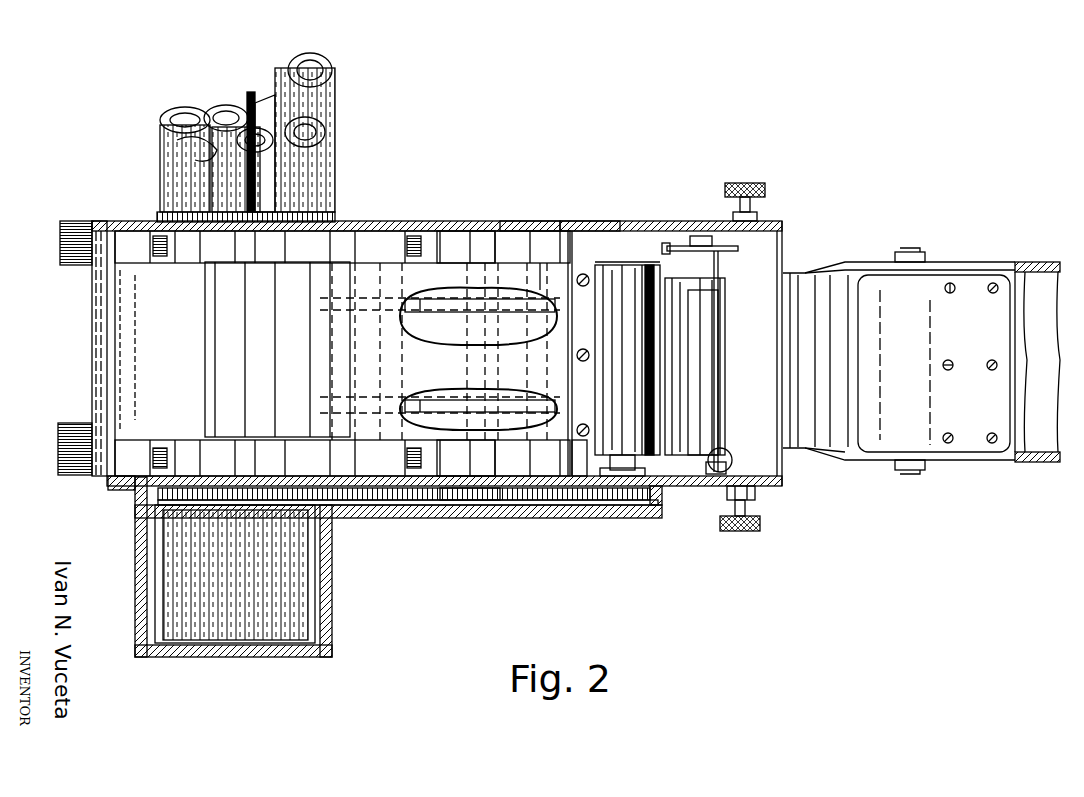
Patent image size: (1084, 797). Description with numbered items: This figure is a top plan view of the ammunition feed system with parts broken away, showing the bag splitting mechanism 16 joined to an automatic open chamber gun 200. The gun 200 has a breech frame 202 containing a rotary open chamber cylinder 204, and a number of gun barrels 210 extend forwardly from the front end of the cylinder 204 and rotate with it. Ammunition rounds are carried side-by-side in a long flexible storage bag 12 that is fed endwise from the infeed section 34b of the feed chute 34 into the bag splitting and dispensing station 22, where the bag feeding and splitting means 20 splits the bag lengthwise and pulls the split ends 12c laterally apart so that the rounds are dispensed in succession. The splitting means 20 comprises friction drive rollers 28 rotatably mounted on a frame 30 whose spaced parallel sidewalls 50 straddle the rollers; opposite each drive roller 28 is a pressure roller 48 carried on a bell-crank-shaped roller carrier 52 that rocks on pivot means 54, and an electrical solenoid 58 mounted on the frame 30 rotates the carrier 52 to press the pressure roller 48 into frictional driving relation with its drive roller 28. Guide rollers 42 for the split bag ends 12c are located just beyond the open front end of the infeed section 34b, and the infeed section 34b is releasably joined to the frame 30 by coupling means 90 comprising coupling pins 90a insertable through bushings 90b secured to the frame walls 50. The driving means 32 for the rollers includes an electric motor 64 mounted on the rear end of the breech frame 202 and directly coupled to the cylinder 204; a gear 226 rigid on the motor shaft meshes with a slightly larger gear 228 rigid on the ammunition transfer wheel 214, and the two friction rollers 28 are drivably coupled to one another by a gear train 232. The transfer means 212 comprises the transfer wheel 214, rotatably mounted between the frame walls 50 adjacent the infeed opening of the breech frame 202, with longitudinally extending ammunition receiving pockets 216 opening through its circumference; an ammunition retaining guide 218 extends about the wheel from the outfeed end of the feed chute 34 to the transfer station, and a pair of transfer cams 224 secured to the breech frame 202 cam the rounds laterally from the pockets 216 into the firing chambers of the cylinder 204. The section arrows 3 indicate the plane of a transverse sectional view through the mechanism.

The automatic gun 200 is at (82, 362).
The breech frame 202 is at (105, 303).
The breech cylinder 204 is at (222, 337).
The gun barrels 210 is at (336, 158).
The ammunition infeed transfer means 212 is at (450, 417).
The ammunition transfer wheel 214 is at (428, 332).
The ammunition receiving pockets 216 is at (507, 335).
The ammunition retaining guide 218 is at (541, 275).
The transfer cams 224 is at (420, 305).
The cylinder gear 226 is at (160, 492).
The transfer wheel gear 228 is at (487, 494).
The gear train 232 is at (611, 512).
The frame 30 is at (527, 219).
The driving means 32 is at (455, 508).
The frame sidewalls 50 is at (573, 228).
The bag feeding and splitting means 20 is at (589, 270).
The bag splitting mechanism 16 is at (580, 445).
The ammunition storage bag 12 is at (648, 290).
The split bag ends 12c is at (640, 472).
The friction drive rollers 28 is at (646, 318).
The pressure roller 48 is at (680, 365).
The guide rollers 42 is at (697, 425).
The bag splitting and ammunition dispensing station 22 is at (702, 215).
The roller carrier 52 is at (690, 238).
The pivot means 54 is at (708, 247).
The electrical solenoids 58 is at (729, 468).
The coupling means 90 is at (749, 540).
The coupling pins 90a is at (762, 210).
The bushings 90b is at (757, 496).
The feed chute 34 is at (1038, 261).
The infeed section 34b is at (1030, 464).
The electric motor 64 is at (225, 615).
The section line 3- 3 is at (130, 497).